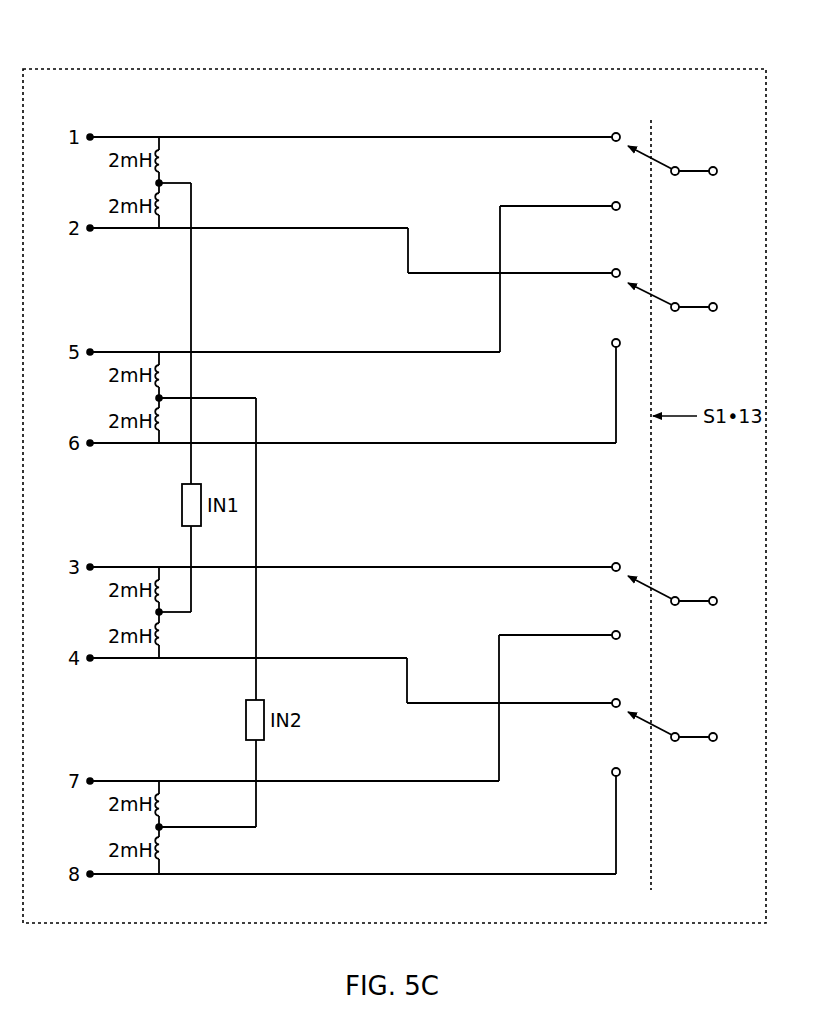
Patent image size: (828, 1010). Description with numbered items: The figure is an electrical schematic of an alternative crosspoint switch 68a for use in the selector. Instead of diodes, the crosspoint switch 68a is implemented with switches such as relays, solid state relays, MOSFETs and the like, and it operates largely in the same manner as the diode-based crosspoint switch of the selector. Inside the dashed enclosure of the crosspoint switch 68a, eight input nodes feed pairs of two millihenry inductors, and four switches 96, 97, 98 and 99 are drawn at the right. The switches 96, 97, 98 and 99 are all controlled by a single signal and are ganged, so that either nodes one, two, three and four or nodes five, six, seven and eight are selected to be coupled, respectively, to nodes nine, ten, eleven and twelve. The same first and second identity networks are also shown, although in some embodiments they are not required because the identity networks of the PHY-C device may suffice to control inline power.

The alternative crosspoint switch 68a is at (612, 69).
The switch 96 is at (674, 150).
The switch 97 is at (673, 290).
The switch 98 is at (674, 582).
The switch 99 is at (674, 717).